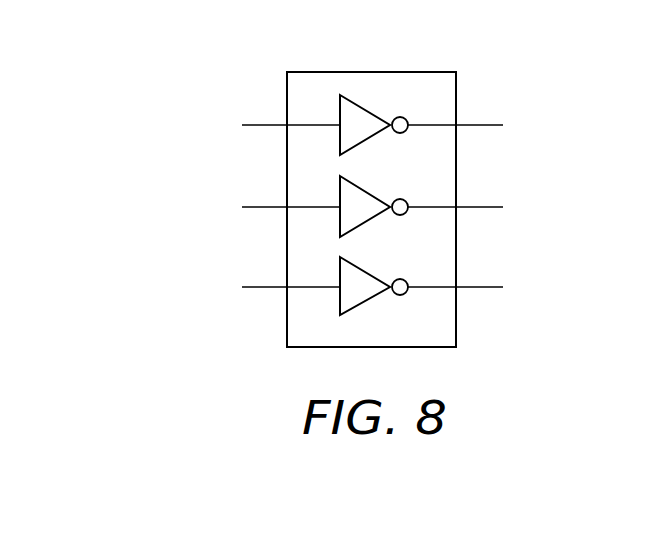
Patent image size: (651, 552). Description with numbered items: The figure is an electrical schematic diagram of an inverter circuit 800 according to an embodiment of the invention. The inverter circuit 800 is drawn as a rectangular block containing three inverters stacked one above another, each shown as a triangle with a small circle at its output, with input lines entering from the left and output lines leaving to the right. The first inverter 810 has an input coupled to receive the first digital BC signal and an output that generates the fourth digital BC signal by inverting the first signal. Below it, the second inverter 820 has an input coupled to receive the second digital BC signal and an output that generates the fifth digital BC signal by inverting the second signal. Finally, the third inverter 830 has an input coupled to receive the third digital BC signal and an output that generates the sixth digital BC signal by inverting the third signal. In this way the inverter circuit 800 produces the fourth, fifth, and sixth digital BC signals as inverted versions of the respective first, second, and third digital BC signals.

The inverter circuit 800 is at (283, 178).
The first inverter 810 is at (367, 107).
The second inverter 820 is at (366, 190).
The third inverter 830 is at (367, 270).